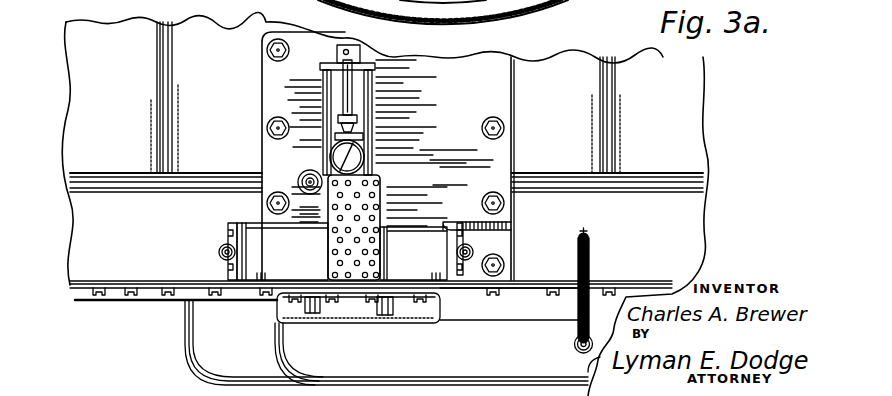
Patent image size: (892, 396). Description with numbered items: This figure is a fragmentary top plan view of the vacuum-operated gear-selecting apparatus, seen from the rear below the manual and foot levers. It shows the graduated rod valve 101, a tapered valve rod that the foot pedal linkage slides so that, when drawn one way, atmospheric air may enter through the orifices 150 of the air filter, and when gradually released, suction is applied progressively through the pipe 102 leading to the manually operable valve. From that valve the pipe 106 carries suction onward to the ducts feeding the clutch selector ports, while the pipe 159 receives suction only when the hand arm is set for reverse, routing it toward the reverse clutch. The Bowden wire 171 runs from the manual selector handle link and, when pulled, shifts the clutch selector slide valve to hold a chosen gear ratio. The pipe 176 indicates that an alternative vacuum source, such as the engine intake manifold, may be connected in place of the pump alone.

The graduated rod valve 101 is at (358, 57).
The pipe 176 is at (349, 100).
The pipe 102 is at (311, 177).
The orifices 150 is at (371, 218).
The pipe 159 is at (219, 252).
The pipe 106 is at (472, 250).
The Bowden wire 171 is at (587, 241).